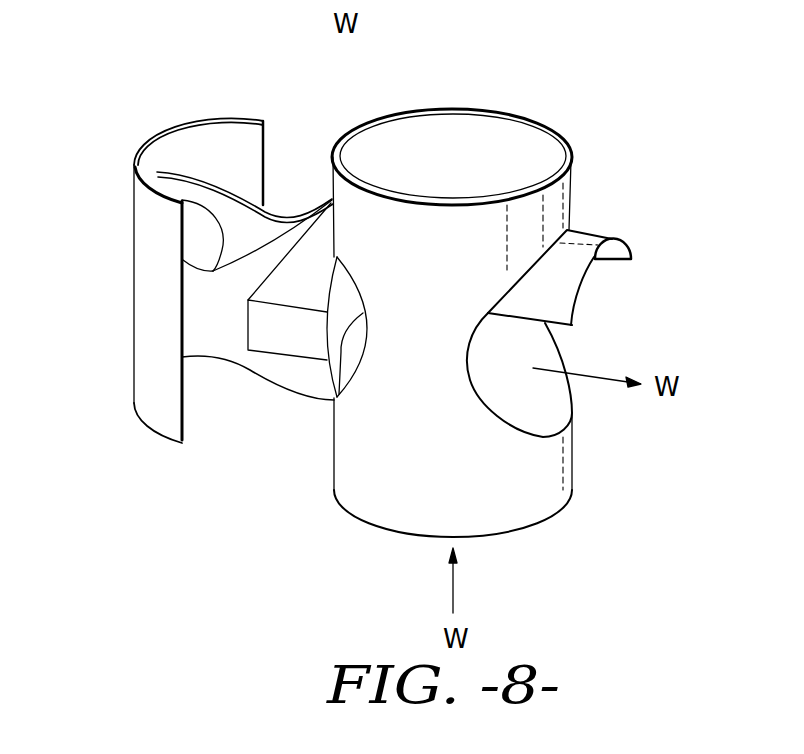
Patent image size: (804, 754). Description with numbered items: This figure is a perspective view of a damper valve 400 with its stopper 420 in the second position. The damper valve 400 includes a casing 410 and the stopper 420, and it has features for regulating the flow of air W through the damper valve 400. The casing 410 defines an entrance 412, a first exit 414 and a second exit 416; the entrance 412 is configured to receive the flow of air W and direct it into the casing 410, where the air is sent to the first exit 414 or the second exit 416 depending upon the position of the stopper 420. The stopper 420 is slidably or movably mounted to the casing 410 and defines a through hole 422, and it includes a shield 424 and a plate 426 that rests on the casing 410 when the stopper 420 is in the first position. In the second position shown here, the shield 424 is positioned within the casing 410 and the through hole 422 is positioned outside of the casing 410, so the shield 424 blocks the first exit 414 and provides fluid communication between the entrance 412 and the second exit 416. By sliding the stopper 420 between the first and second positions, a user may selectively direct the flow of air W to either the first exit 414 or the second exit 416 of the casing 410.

The damper valve 400 is at (151, 70).
The casing 410 is at (548, 463).
The entrance 412 is at (385, 531).
The first exit 414 is at (494, 106).
The second exit 416 is at (575, 350).
The stopper 420 is at (298, 343).
The through hole 422 is at (231, 208).
The shield 424 is at (577, 236).
The plate 426 is at (146, 321).